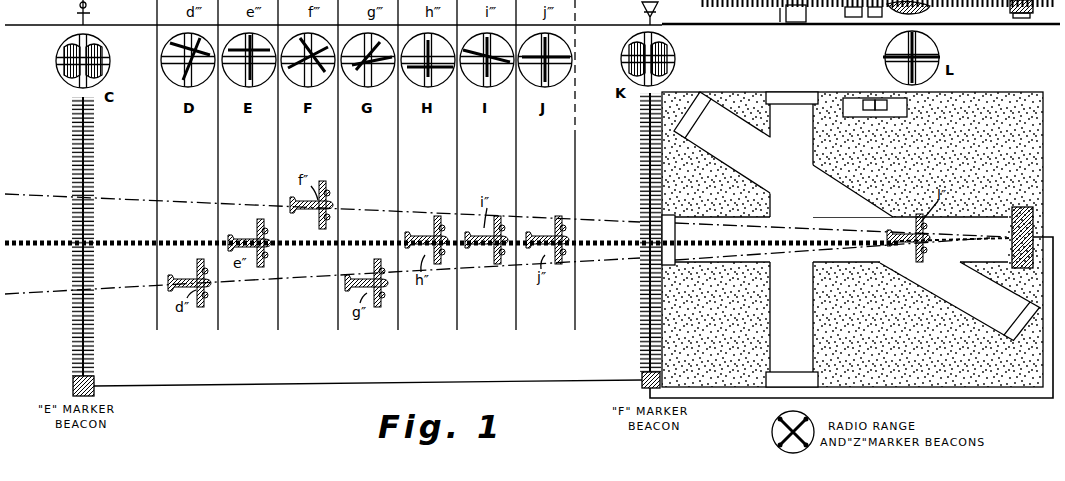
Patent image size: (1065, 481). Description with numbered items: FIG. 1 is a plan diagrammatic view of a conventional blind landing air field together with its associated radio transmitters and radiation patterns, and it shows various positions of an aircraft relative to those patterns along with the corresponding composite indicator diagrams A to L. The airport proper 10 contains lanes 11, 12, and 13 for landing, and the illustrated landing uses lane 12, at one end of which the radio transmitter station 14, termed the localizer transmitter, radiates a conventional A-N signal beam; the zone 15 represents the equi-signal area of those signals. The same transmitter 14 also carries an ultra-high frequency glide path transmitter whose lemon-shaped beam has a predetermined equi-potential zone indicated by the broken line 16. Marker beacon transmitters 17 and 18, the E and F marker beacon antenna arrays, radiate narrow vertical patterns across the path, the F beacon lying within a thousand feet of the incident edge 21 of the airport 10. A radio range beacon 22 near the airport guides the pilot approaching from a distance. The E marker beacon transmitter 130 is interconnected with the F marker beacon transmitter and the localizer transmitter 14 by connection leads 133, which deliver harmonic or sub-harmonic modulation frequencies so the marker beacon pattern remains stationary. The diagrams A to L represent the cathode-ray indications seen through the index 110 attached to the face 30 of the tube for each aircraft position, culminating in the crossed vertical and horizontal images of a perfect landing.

The airport 10 is at (990, 92).
The lane 11 is at (820, 148).
The lane 12 is at (857, 262).
The lane 13 is at (958, 302).
The radio transmitter station 14 is at (1023, 207).
The zone 15 is at (22, 200).
The broken line 16 is at (37, 246).
The marker beacon transmitter 17 is at (80, 13).
The marker beacon transmitter 18 is at (640, 13).
The incident edge 21 is at (662, 369).
The radio range beacon 22 is at (778, 14).
The face 30 is at (68, 43).
The index 110 is at (62, 60).
The E marker beacon transmitter 130 is at (73, 389).
The connection leads 133 is at (404, 383).